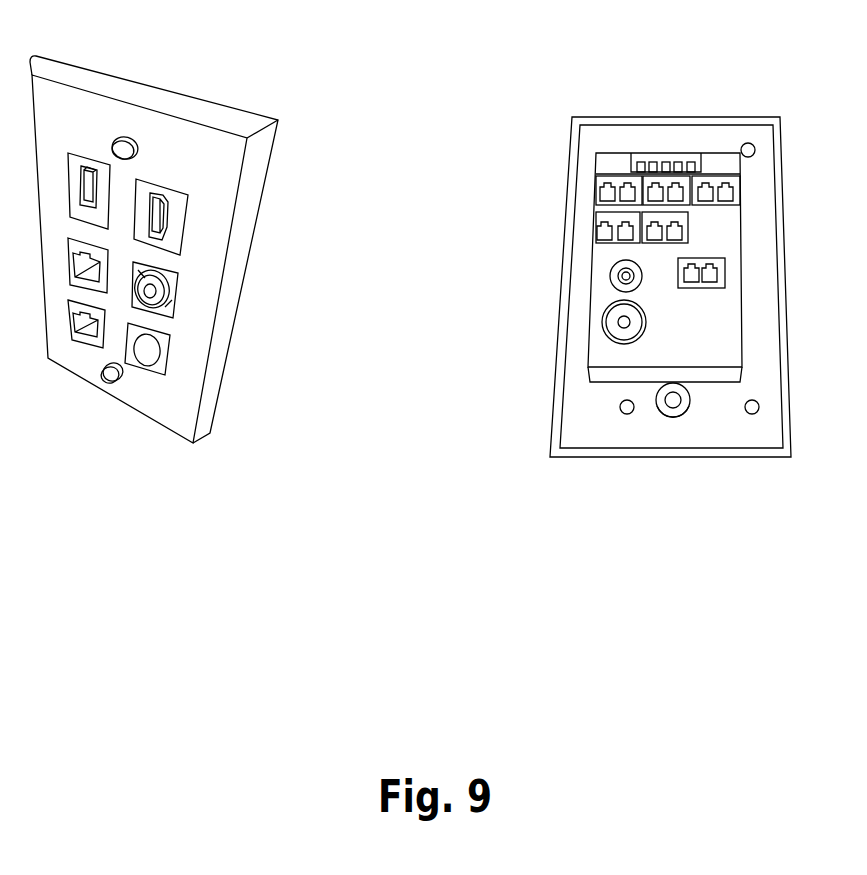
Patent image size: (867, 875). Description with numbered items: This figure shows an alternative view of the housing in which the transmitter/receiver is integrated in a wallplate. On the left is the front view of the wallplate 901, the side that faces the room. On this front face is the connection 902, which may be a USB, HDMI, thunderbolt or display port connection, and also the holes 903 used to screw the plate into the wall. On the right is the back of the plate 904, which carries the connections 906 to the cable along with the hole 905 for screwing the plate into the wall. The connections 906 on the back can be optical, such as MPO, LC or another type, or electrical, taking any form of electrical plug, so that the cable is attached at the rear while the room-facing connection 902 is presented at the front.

The front view of the wallplate 901 is at (147, 82).
The connection 902 is at (183, 230).
The holes to screw the plate in the wall 903 is at (107, 382).
The back of the plate 904 is at (672, 117).
The hole to screw the plate in the wall 905 is at (673, 408).
The connections to the cable 906 is at (602, 249).